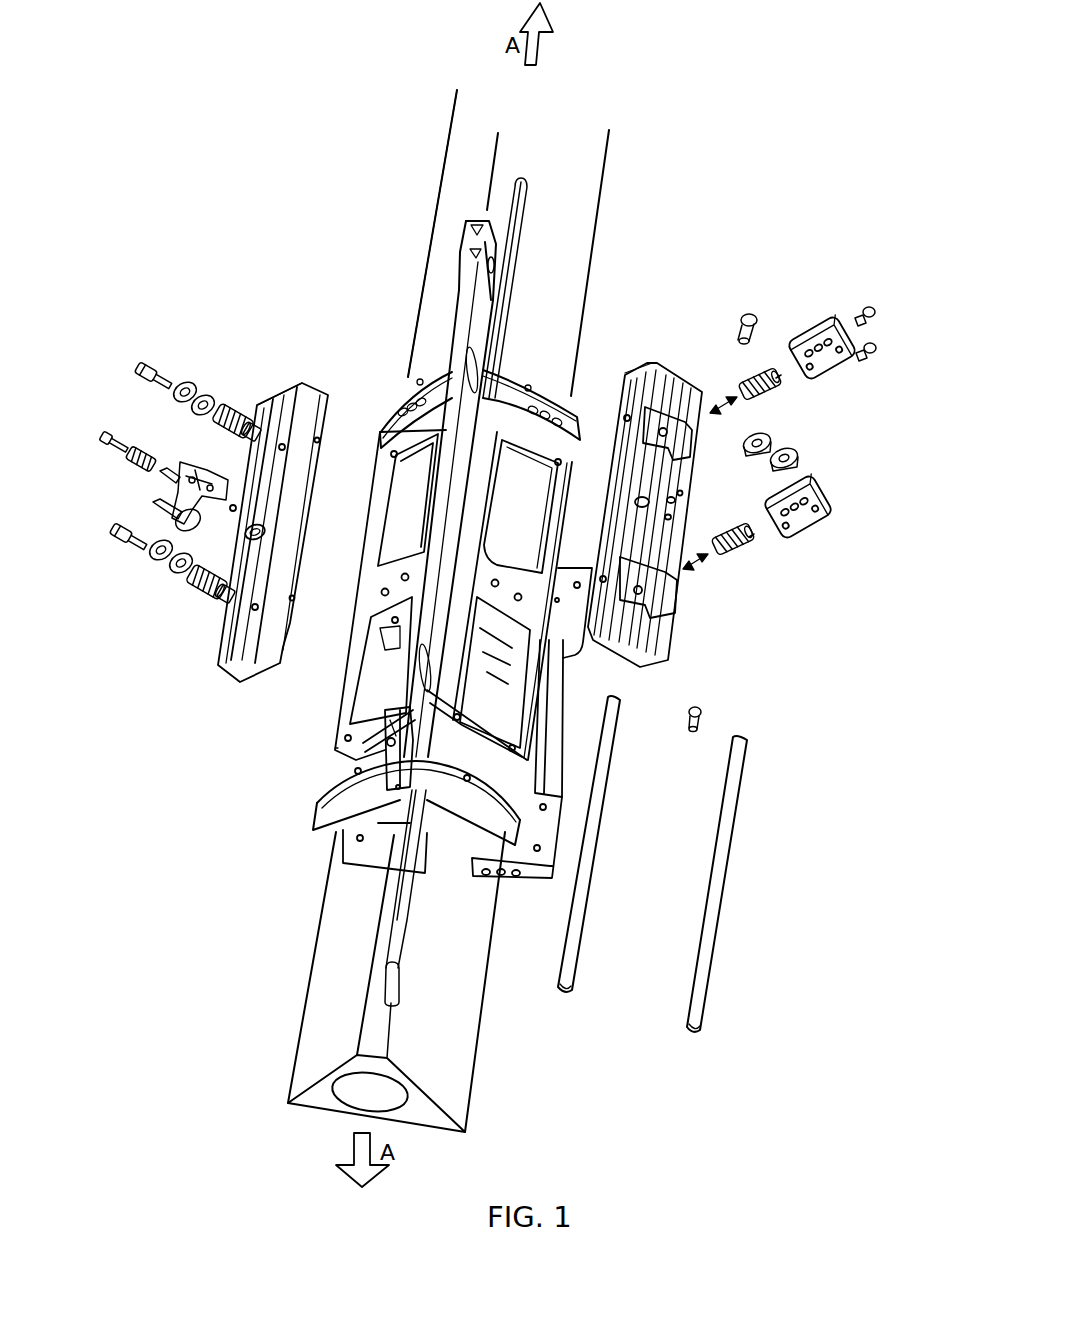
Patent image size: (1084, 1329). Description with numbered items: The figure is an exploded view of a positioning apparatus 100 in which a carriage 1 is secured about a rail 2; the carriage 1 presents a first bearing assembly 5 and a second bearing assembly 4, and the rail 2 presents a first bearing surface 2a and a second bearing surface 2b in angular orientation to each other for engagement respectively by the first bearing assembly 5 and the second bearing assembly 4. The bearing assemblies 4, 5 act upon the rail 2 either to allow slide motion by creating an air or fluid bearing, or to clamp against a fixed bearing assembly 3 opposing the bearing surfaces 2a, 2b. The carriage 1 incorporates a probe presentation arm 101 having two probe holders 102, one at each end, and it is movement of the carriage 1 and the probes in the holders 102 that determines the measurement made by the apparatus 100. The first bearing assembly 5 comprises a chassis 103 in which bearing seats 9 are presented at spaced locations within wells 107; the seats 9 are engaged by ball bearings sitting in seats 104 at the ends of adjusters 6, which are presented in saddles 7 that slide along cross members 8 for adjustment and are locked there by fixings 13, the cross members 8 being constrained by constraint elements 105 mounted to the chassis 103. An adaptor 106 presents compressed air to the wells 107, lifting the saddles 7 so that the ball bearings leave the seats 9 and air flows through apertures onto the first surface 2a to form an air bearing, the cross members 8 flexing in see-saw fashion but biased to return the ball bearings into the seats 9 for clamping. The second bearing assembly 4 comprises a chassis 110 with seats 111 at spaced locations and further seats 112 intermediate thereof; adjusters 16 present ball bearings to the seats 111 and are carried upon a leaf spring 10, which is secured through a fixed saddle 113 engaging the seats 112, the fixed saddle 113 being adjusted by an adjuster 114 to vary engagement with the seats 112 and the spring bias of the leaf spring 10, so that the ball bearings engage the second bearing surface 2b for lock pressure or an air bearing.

The carriage 1 is at (318, 737).
The rail 2 is at (518, 146).
The first bearing surface 2a is at (467, 1027).
The second bearing surface 2b is at (343, 903).
The fixed bearing assembly 3 is at (550, 672).
The second bearing assembly 4 is at (367, 340).
The first bearing assembly 5 is at (848, 284).
The adjuster 6 is at (770, 383).
The saddle 7 is at (847, 370).
The cross member 8 is at (712, 872).
The bearing seat 9 is at (667, 432).
The leaf spring 10 is at (252, 425).
The fixing 13 is at (853, 343).
The adjuster 16 is at (230, 410).
The positioning apparatus 100 is at (362, 299).
The probe presentation arm 101 is at (482, 326).
The probe holder 102 is at (497, 247).
The chassis 103 is at (673, 372).
The seat 104 is at (742, 387).
The constraint element 105 is at (803, 452).
The adaptor 106 is at (750, 312).
The well 107 is at (652, 410).
The chassis 110 is at (280, 392).
The seat 111 is at (307, 383).
The further seat 112 is at (277, 521).
The fixed saddle 113 is at (193, 463).
The adjuster 114 is at (137, 446).